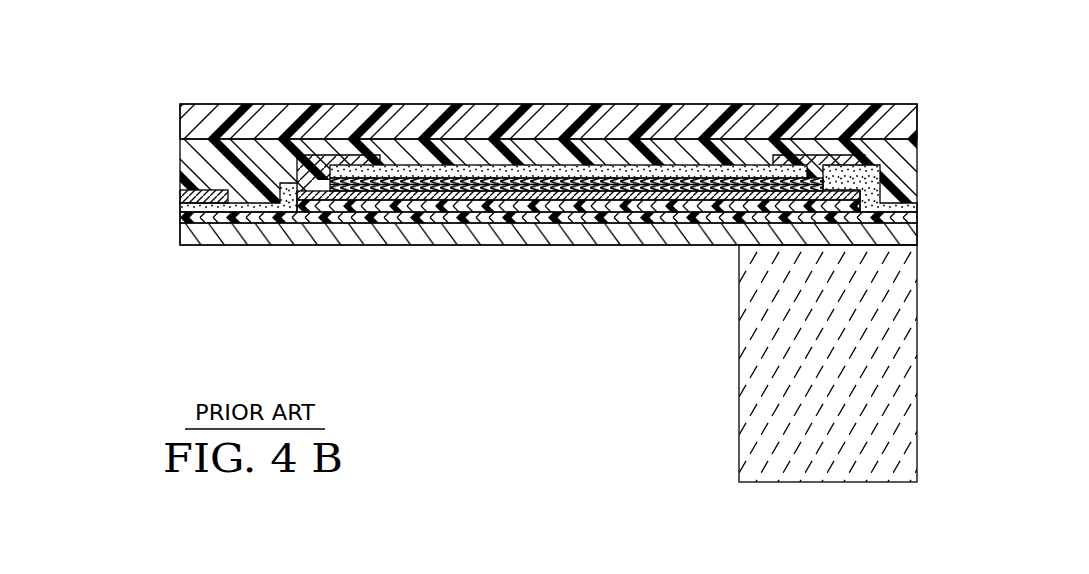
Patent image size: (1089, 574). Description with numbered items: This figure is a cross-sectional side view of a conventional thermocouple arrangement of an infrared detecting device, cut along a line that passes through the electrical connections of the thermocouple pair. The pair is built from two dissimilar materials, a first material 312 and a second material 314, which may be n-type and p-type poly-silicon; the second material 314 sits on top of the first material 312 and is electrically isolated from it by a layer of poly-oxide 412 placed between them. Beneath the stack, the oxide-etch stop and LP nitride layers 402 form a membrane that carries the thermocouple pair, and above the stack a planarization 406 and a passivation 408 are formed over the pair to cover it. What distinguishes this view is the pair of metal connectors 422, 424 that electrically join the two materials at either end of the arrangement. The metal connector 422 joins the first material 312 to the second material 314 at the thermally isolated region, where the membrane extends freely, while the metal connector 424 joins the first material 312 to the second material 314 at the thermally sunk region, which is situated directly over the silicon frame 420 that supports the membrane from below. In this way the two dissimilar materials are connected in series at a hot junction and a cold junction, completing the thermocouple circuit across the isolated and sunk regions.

The first material 312 is at (535, 177).
The second material 314 is at (338, 210).
The oxide-etch stop and LP nitride layers 402 is at (180, 212).
The planarization 406 is at (912, 162).
The passivation 408 is at (912, 105).
The poly-oxide 412 is at (488, 205).
The silicon frame 420 is at (745, 338).
The metal connector 422 is at (315, 167).
The metal connector 424 is at (815, 168).